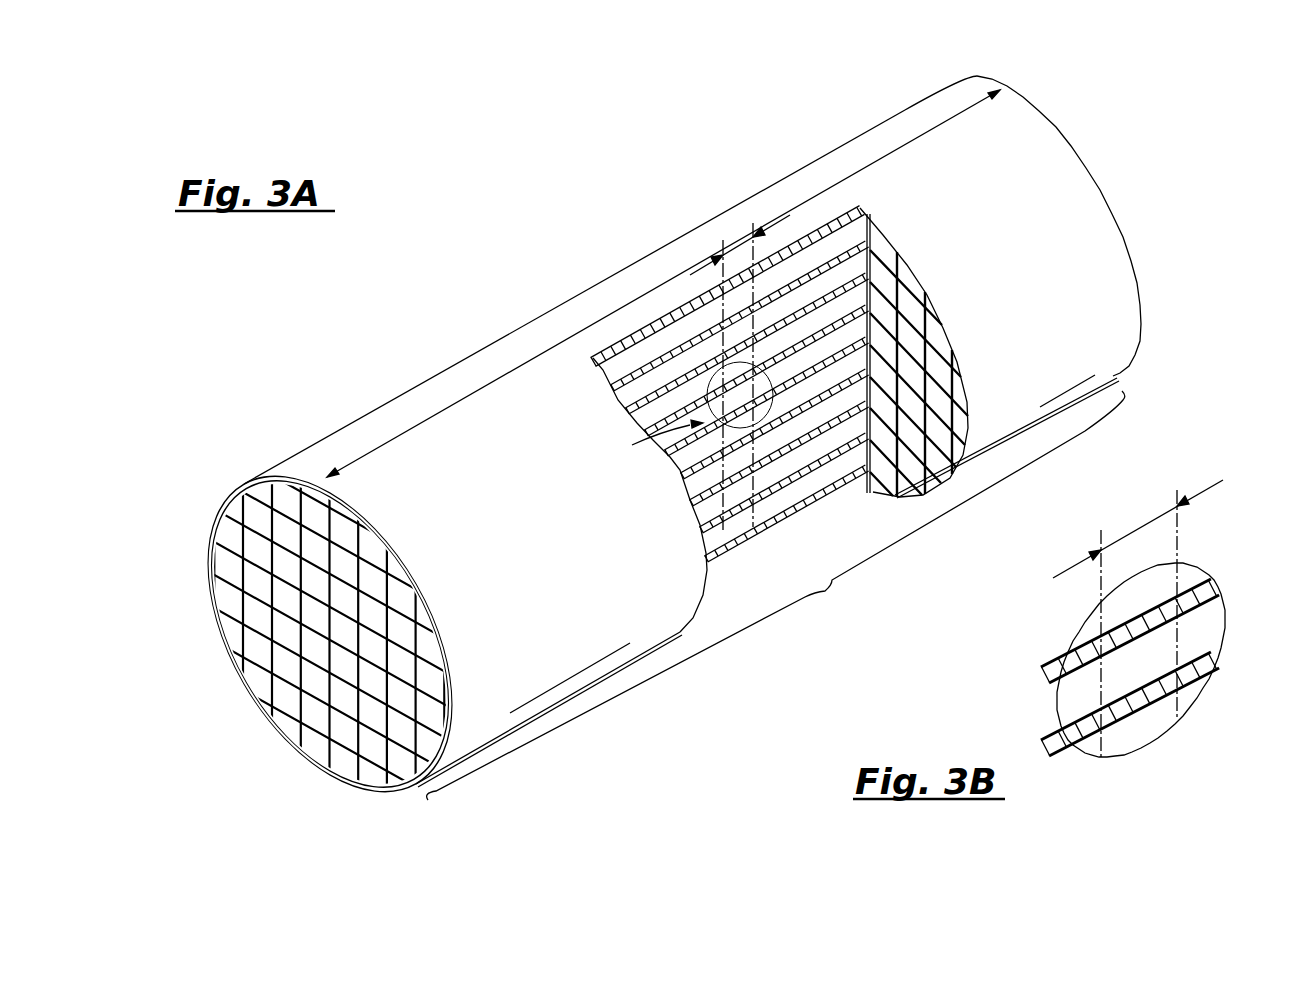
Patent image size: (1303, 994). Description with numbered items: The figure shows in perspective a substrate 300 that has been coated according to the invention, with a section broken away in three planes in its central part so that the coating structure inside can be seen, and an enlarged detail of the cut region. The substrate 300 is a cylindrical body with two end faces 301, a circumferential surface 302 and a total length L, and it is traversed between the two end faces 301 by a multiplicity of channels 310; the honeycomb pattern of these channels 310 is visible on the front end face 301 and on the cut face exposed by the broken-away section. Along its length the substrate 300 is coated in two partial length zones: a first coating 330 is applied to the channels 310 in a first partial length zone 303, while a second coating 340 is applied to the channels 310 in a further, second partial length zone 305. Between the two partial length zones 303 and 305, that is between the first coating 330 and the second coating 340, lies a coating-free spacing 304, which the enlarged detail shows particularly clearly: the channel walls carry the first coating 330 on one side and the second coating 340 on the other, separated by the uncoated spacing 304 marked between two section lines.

In FIG. 3A, the substrate 300 is at (325, 422).
In FIG. 3B, the substrate 300 is at (1178, 762).
In FIG. 3A, the end face 301 is at (1047, 108).
In FIG. 3A, the circumferential surface 302 is at (1100, 290).
In FIG. 3A, the first partial length zone 303 is at (563, 337).
In FIG. 3A, the spacing 304 is at (722, 235).
In FIG. 3B, the spacing 304 is at (1143, 524).
In FIG. 3A, the second partial length zone 305 is at (873, 158).
In FIG. 3A, the channels 310 is at (842, 368).
In FIG. 3B, the channels 310 is at (1137, 667).
In FIG. 3A, the first coating 330 is at (628, 378).
In FIG. 3B, the first coating 330 is at (1070, 640).
In FIG. 3A, the second coating 340 is at (850, 244).
In FIG. 3B, the second coating 340 is at (1183, 580).